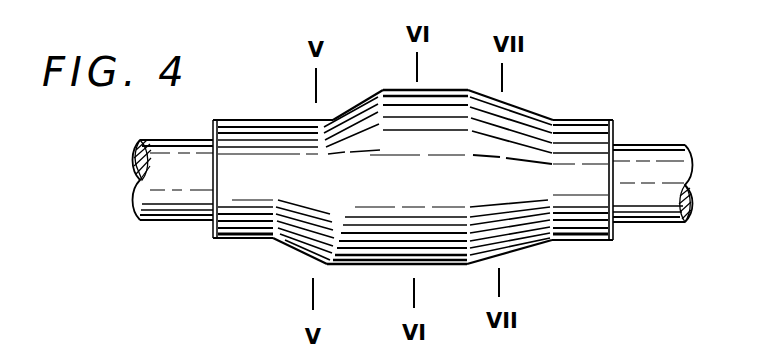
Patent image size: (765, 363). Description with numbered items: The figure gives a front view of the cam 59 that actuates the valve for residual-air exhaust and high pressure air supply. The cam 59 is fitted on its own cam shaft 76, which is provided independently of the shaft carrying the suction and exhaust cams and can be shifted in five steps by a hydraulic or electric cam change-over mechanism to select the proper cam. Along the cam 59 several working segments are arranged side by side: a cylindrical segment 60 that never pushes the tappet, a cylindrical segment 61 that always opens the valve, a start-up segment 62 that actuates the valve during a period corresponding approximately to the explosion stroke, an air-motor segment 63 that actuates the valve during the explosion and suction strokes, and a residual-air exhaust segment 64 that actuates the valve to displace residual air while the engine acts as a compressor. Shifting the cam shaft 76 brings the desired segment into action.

The cam 59 is at (110, 177).
The cylindrical segment 60 is at (232, 240).
The cylindrical segment 61 is at (588, 242).
The start-up segment 62 is at (293, 250).
The air-motor segment 63 is at (377, 267).
The residual-air exhaust segment 64 is at (520, 250).
The cam shaft 76 is at (643, 146).